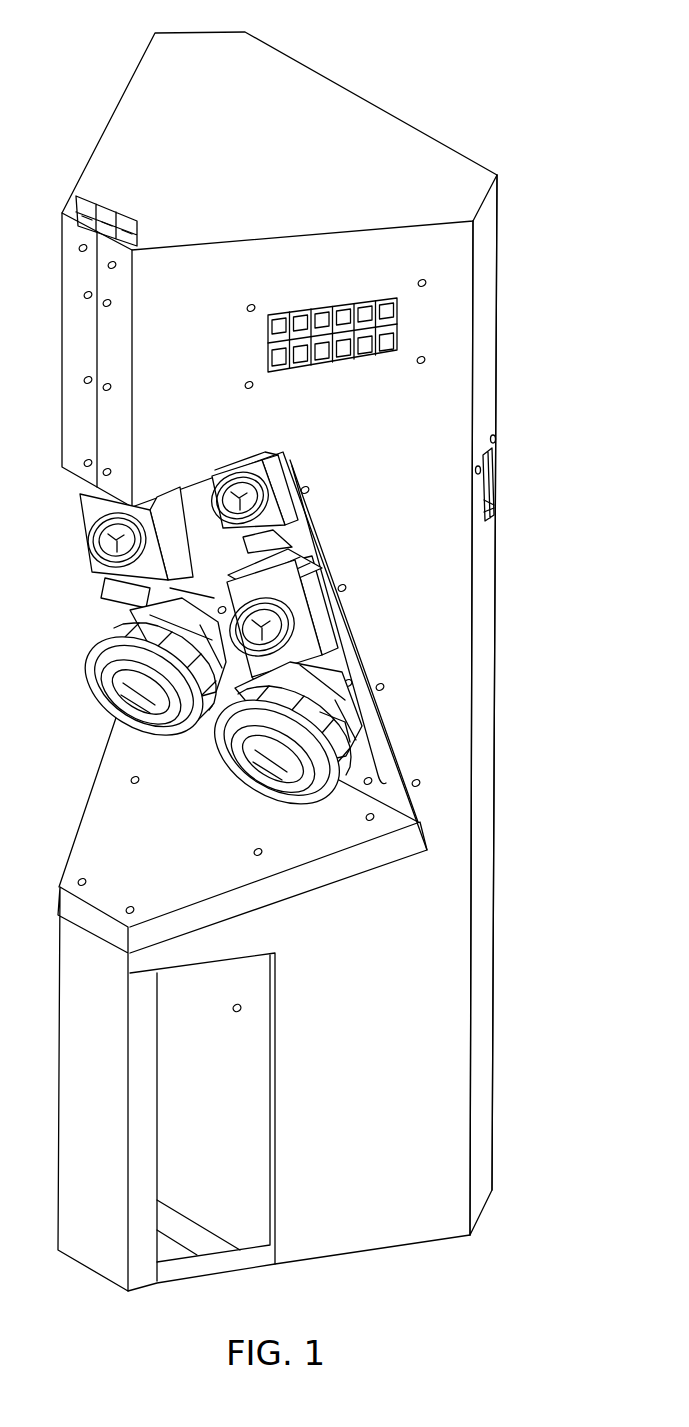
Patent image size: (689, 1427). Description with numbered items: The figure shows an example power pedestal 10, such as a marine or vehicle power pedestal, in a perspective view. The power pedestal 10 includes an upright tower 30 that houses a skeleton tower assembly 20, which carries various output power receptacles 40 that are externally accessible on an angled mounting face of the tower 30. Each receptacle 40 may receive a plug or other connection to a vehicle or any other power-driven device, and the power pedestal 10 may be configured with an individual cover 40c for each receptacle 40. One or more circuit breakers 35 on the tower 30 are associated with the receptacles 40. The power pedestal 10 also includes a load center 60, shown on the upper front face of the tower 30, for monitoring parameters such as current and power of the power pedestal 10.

The power pedestal 10 is at (451, 94).
The skeleton tower assembly 20 is at (198, 503).
The tower 30 is at (449, 393).
The circuit breaker 35 is at (492, 481).
The output power receptacle 40 is at (224, 655).
The cover 40c is at (246, 752).
The load center 60 is at (331, 305).